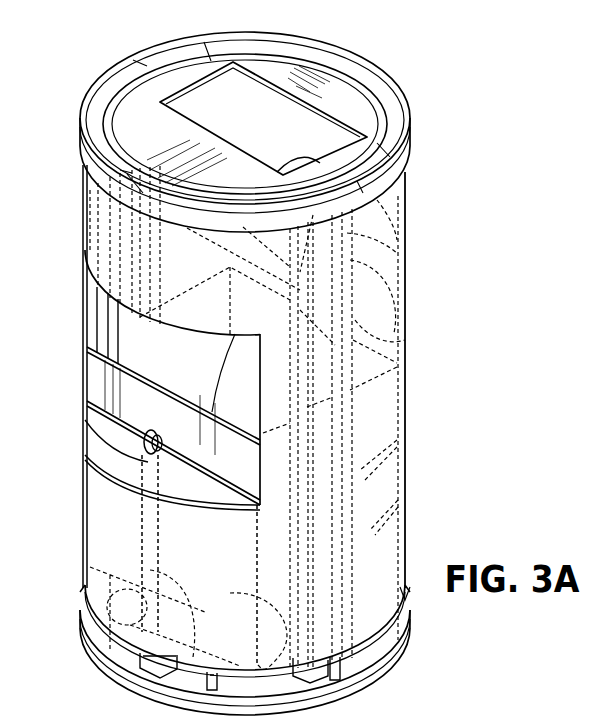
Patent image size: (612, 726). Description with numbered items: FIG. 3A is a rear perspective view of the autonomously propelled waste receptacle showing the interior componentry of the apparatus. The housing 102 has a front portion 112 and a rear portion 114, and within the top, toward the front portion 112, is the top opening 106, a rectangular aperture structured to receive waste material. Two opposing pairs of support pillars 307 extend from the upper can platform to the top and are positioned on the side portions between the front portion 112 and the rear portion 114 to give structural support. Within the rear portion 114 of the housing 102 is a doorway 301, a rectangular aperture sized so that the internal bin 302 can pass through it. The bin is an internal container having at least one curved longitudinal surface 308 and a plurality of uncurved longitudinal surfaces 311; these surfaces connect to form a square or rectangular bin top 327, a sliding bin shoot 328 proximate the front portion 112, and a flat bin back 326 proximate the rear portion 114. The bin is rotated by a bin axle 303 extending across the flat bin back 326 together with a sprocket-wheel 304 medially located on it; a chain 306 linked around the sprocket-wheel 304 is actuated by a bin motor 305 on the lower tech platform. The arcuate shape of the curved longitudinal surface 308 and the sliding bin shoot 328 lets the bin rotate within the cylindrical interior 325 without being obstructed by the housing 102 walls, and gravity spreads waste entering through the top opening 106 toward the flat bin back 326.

The housing 102 is at (95, 193).
The top opening 106 is at (265, 95).
The front portion 112 is at (406, 178).
The rear portion 114 is at (92, 247).
The doorway 301 is at (93, 310).
The internal bin 302 is at (95, 390).
The bin axle 303 is at (100, 416).
The sprocket-wheel 304 is at (98, 458).
The bin motor 305 is at (113, 653).
The chain 306 is at (207, 698).
The support pillars 307 is at (412, 337).
The curved longitudinal surface 308 is at (407, 503).
The uncurved longitudinal surfaces 311 is at (93, 557).
The interior 325 is at (205, 97).
The flat bin back 326 is at (337, 688).
The bin top 327 is at (87, 347).
The sliding bin shoot 328 is at (407, 451).